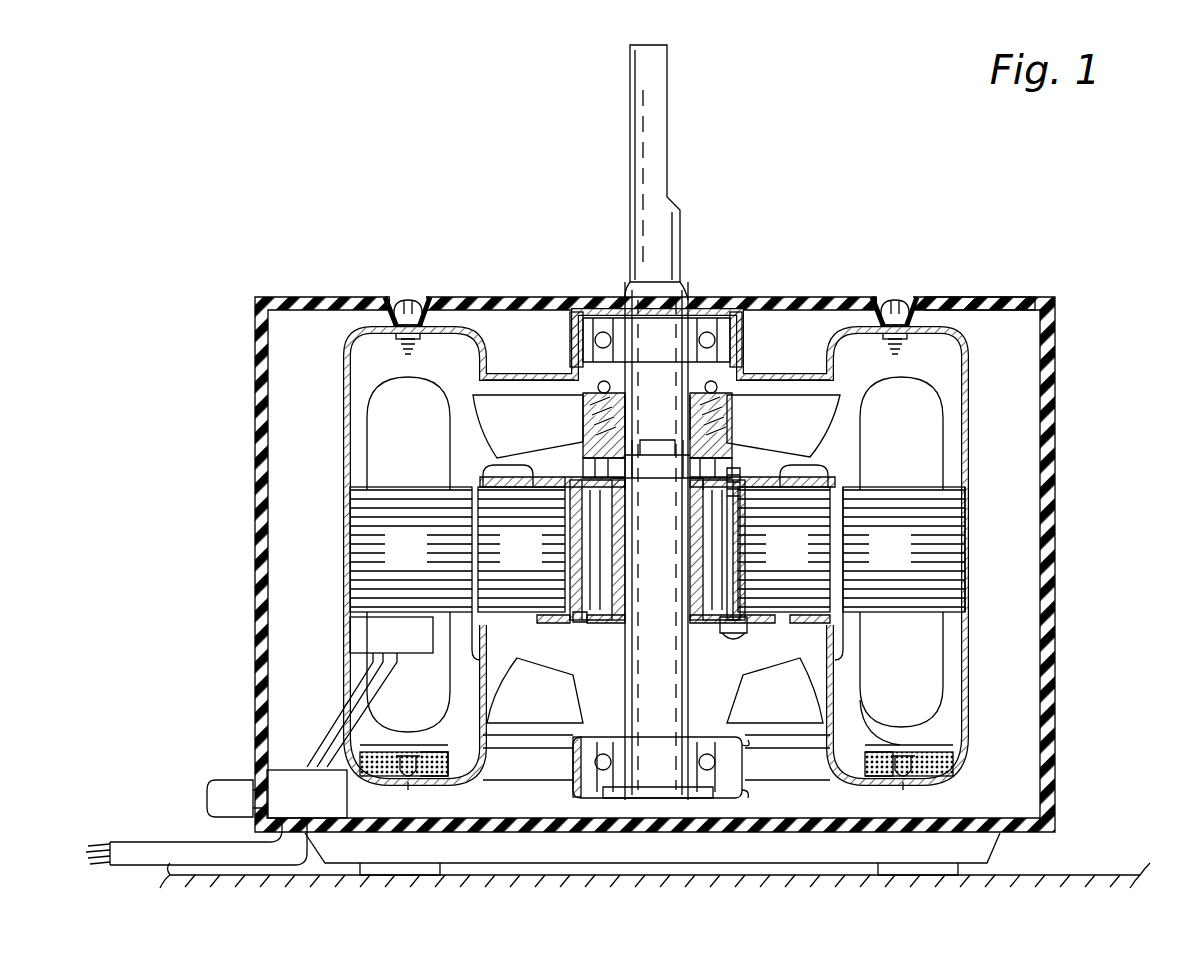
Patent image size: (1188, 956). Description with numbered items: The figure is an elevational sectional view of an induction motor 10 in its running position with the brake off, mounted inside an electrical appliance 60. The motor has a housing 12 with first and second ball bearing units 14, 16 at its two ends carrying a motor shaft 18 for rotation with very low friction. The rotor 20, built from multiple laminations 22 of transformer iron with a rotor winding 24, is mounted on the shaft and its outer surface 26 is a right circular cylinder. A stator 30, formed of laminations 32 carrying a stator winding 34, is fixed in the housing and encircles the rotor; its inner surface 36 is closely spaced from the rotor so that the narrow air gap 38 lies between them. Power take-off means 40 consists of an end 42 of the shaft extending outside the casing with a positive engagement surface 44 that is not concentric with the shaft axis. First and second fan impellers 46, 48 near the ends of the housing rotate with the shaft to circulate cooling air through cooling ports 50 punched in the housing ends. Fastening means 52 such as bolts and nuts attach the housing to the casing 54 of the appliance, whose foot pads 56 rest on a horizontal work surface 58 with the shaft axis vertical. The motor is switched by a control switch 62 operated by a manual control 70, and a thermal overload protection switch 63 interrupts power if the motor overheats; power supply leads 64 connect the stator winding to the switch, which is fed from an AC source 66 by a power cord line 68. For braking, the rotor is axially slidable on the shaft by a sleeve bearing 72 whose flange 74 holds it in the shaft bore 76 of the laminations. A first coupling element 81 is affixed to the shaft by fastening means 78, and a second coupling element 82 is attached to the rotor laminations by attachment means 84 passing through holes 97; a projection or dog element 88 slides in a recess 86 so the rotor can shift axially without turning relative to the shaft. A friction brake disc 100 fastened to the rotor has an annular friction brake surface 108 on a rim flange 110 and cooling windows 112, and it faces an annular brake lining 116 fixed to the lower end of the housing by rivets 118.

The induction motor 10 is at (978, 360).
The housing 12 is at (344, 455).
The first ball bearing unit 14 is at (742, 338).
The second ball bearing unit 16 is at (735, 780).
The motor shaft 18 is at (676, 658).
The rotor 20 is at (835, 480).
The rotor laminations 22 is at (508, 566).
The rotor winding 24 is at (483, 640).
The outer surface of the rotor laminations 26 is at (843, 530).
The stator 30 is at (950, 487).
The stator laminations 32 is at (392, 566).
The stator winding 34 is at (378, 415).
The inner surface of the stator laminations 36 is at (830, 623).
The air gap 38 is at (483, 480).
The power take-off means 40 is at (663, 172).
The end of the motor shaft 42 is at (636, 122).
The positive engagement surface 44 is at (668, 152).
The first fan impeller 46 is at (490, 438).
The second fan impeller 48 is at (509, 708).
The cooling ports 50 is at (525, 378).
The fastening means 52 is at (406, 298).
The casing 54 is at (965, 297).
The foot pads 56 is at (400, 878).
The horizontal work surface 58 is at (1120, 873).
The electrical appliance 60 is at (1062, 505).
The control switch 62 is at (270, 772).
The thermal overload protection switch 63 is at (352, 628).
The electrical power supply leads 64 is at (342, 710).
The source of alternating current electrical power 66 is at (56, 850).
The electrical power cord line 68 is at (155, 842).
The manual control 70 is at (222, 782).
The sleeve bearing 72 is at (626, 550).
The flange 74 is at (628, 510).
The shaft bore 76 is at (630, 578).
The fastening means 78 is at (590, 415).
The first coupling element 81 is at (730, 450).
The second coupling element 82 is at (637, 476).
The attachment means 84 is at (745, 633).
The recess 86 is at (645, 420).
The projection or dog element 88 is at (665, 440).
The holes in the rotor laminations 97 is at (740, 585).
The friction brake disc 100 is at (860, 720).
The annular friction brake surface 108 is at (950, 775).
The rim flange 110 is at (955, 752).
The cooling windows 112 is at (830, 685).
The brake lining 116 is at (425, 778).
The rivets 118 is at (407, 788).